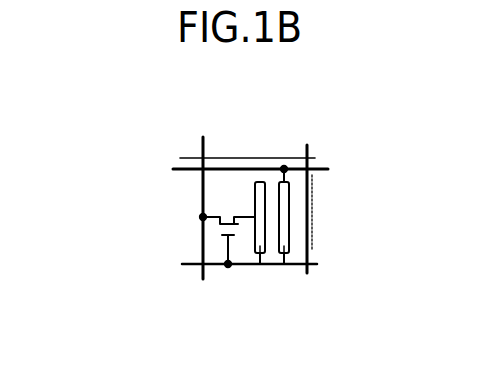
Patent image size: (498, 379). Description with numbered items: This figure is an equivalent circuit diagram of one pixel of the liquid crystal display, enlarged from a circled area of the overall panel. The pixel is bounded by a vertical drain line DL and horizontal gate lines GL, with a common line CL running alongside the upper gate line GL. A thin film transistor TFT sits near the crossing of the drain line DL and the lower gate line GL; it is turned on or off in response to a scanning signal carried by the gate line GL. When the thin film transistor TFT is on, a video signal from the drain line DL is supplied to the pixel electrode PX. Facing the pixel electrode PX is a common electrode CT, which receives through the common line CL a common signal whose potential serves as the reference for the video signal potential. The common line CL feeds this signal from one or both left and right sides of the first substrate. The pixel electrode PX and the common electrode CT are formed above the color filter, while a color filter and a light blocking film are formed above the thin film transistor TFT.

The drain line DL is at (207, 175).
The common line CL is at (245, 132).
The gate line GL is at (236, 215).
The thin film transistor TFT is at (173, 255).
The pixel electrode PX is at (245, 275).
The common electrode CT is at (295, 255).